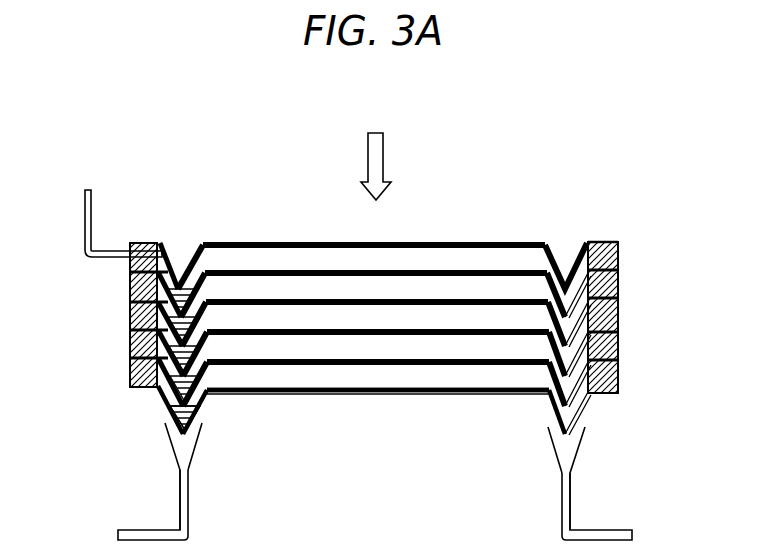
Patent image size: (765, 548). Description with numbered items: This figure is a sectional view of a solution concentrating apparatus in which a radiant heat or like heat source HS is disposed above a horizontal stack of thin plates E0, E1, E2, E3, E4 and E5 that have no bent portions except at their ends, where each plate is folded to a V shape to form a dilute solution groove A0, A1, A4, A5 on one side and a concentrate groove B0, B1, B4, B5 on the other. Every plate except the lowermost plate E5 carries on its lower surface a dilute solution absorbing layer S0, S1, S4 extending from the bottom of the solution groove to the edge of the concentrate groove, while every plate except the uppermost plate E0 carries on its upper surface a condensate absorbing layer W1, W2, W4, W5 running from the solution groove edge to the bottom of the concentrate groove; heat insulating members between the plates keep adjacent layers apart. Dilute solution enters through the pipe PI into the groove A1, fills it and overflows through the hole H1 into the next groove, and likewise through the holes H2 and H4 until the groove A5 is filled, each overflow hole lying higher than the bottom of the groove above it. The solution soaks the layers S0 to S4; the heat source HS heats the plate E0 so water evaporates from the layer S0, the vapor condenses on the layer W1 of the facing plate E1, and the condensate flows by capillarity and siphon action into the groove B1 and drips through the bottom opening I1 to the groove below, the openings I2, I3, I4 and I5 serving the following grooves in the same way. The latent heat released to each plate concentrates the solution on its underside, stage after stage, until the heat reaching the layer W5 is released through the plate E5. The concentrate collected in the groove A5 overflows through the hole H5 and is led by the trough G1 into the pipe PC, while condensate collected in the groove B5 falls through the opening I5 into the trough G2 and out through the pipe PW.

The heat source HS is at (374, 155).
The dilute solution groove A0 is at (178, 262).
The dilute solution groove A1 is at (182, 277).
The dilute solution absorbing layer S0 is at (444, 250).
The dilute solution absorbing layer S1 is at (262, 276).
The condensate absorbing layer W1 is at (305, 272).
The uppermost thin plate E0 is at (403, 242).
The condensate absorbing layer W2 is at (476, 297).
The concentrate groove B0 is at (563, 258).
The concentrate groove B1 is at (597, 241).
The thin plate E1 is at (618, 270).
The thin plate E2 is at (618, 298).
The thin plate E3 is at (618, 333).
The thin plate E4 is at (618, 362).
The lowermost thin plate E5 is at (293, 393).
The bottom opening I1 is at (568, 321).
The bottom opening I2 is at (568, 352).
The bottom opening I3 is at (568, 396).
The bottom opening I4 is at (568, 418).
The bottom opening I5 is at (572, 447).
The pipe PI is at (85, 210).
The pipe PC is at (188, 496).
The pipe PW is at (615, 530).
The overflow hole H1 is at (165, 283).
The overflow hole H2 is at (165, 313).
The overflow hole H4 is at (165, 369).
The overflow hole H5 is at (165, 401).
The dilute solution groove A4 is at (163, 398).
The dilute solution groove A5 is at (188, 420).
The trough G1 is at (165, 442).
The trough G2 is at (553, 458).
The dilute solution absorbing layer S4 is at (413, 367).
The condensate absorbing layer W4 is at (466, 352).
The condensate absorbing layer W5 is at (351, 385).
The concentrate groove B4 is at (565, 397).
The concentrate groove B5 is at (565, 430).